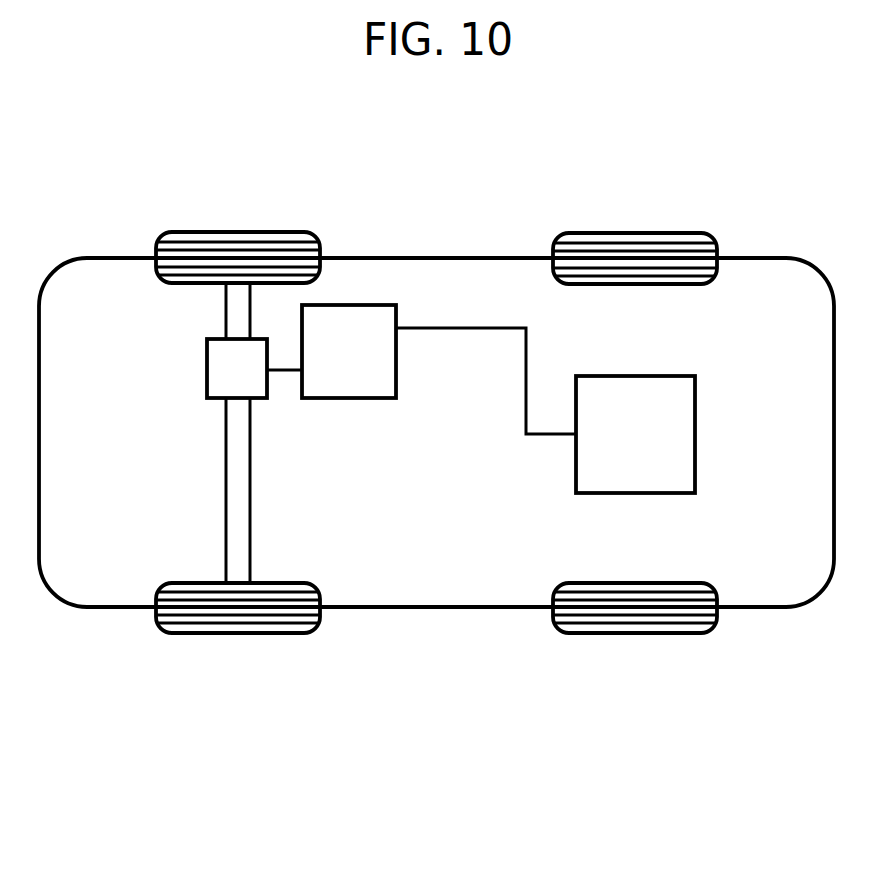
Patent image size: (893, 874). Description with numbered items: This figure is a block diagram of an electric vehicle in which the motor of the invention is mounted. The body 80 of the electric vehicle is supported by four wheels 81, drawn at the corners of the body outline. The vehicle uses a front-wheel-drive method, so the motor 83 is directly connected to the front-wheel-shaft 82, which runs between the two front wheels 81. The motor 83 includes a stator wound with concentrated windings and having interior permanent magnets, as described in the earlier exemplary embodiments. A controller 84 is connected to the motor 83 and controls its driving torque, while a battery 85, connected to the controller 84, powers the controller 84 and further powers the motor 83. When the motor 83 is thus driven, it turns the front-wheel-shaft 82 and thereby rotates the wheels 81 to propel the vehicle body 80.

The body 80 is at (402, 257).
The wheels 81 is at (218, 233).
The front-wheel-shaft 82 is at (225, 478).
The motor 83 is at (207, 363).
The controller 84 is at (397, 369).
The battery 85 is at (695, 425).